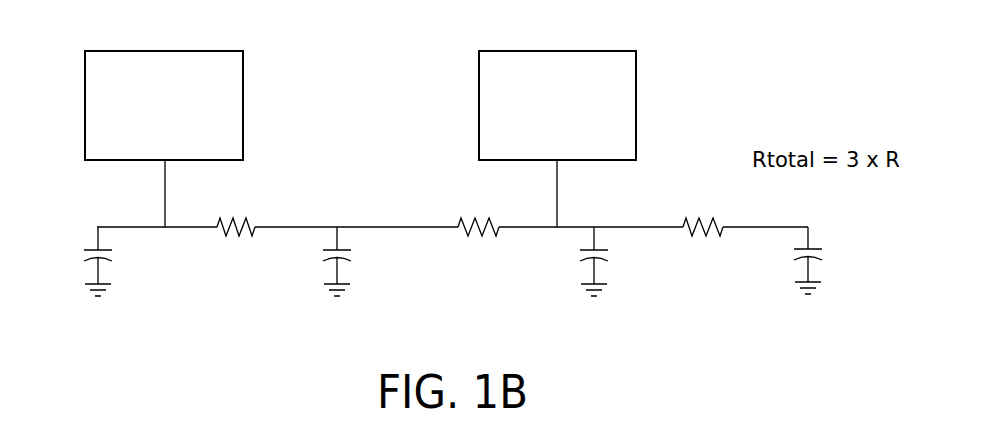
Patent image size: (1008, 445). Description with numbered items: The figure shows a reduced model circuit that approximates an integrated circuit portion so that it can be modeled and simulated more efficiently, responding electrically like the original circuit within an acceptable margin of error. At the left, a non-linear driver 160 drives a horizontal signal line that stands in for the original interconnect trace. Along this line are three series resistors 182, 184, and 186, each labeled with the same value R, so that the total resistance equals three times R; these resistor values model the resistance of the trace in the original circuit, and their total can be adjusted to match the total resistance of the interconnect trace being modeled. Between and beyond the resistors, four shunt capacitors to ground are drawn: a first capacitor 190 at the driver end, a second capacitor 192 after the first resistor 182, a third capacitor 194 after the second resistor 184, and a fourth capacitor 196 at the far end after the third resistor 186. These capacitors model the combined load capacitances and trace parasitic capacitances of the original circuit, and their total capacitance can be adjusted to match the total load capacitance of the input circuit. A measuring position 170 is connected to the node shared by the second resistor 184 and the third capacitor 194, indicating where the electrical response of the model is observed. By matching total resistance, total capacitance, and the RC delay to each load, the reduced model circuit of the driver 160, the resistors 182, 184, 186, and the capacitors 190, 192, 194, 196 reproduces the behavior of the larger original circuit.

The non-linear driver 160 is at (243, 103).
The measuring position 170 is at (636, 98).
The resistor 182 is at (240, 233).
The resistor 184 is at (487, 235).
The resistor 186 is at (710, 237).
The capacitor C0 190 is at (93, 262).
The capacitor C1 192 is at (343, 260).
The capacitor C2 194 is at (602, 258).
The capacitor C3 196 is at (815, 262).